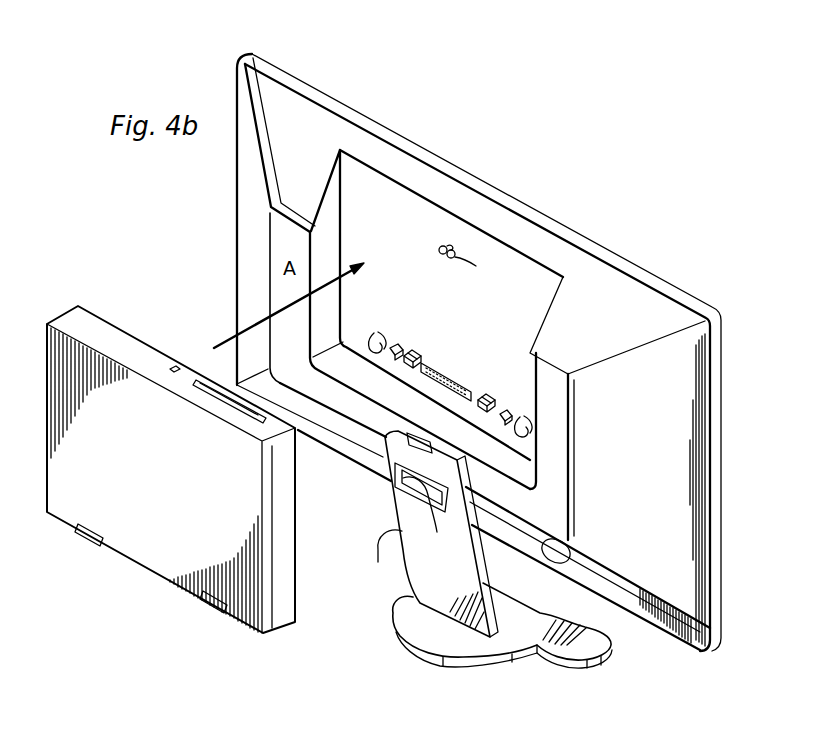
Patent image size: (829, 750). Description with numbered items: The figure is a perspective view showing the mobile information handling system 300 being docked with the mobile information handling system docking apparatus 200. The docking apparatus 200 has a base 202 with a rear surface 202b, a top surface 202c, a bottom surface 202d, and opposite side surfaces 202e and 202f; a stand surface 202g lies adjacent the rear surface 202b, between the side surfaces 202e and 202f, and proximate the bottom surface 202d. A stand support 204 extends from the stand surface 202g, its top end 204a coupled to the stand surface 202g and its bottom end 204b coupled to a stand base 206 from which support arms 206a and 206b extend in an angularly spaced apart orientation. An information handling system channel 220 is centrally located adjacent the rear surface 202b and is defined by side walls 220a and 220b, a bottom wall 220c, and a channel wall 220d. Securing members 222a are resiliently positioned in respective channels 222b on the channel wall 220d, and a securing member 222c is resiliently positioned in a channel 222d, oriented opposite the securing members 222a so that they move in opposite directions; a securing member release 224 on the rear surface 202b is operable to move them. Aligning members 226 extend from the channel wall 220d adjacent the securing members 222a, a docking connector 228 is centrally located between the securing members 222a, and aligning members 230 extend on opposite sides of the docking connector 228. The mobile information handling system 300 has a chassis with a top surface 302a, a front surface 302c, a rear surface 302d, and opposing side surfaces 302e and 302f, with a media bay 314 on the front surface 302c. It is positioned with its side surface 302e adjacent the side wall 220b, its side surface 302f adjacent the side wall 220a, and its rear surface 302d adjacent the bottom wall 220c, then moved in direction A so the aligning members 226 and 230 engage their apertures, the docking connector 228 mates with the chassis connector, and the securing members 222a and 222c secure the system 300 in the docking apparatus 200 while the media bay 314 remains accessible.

The mobile information handling system docking apparatus 200 is at (673, 173).
The base 202 is at (474, 352).
The rear surface 202b is at (247, 205).
The top surface 202c is at (597, 224).
The bottom surface 202d is at (397, 468).
The side surface 202e is at (722, 482).
The side surface 202f is at (237, 262).
The stand surface 202g is at (568, 556).
The stand support 204 is at (425, 534).
The top end 204a is at (429, 519).
The bottom end 204b is at (397, 633).
The stand base 206 is at (469, 645).
The support arm 206a is at (392, 530).
The support arm 206b is at (575, 662).
The information handling system channel 220 is at (492, 326).
The side wall 220a is at (326, 215).
The side wall 220b is at (545, 312).
The bottom wall 220c is at (522, 482).
The channel wall 220d is at (385, 192).
The securing member 222a is at (372, 342).
The channel 222b is at (382, 343).
The securing member 222c is at (440, 250).
The channel 222d is at (462, 262).
The securing member release 224 is at (402, 436).
The aligning member 226 is at (397, 350).
The docking connector 228 is at (440, 370).
The aligning member 230 is at (415, 356).
The mobile information handling system 300 is at (189, 444).
The top surface 302a is at (175, 494).
The front surface 302c is at (120, 333).
The rear surface 302d is at (165, 582).
The side surface 302e is at (294, 583).
The side surface 302f is at (48, 322).
The media bay 314 is at (213, 383).